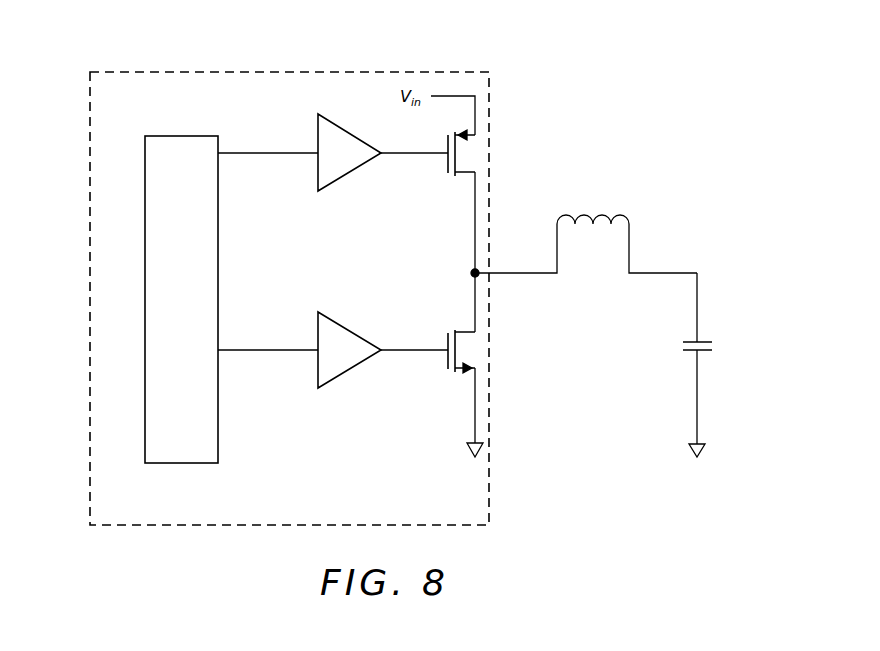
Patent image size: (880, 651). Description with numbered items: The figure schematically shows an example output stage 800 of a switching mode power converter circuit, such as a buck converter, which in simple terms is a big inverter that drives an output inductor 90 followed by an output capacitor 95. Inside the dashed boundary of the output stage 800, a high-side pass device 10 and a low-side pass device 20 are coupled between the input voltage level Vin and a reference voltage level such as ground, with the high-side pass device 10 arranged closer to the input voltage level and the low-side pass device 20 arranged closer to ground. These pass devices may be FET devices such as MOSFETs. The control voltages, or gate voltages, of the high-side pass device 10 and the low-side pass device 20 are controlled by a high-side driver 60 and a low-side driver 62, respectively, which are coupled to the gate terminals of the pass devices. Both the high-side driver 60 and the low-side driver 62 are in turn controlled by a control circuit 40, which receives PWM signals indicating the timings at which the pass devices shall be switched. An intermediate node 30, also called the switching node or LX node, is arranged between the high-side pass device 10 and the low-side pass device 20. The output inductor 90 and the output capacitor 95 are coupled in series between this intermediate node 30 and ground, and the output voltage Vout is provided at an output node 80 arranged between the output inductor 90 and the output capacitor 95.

The output stage 800 is at (178, 62).
The control circuit 40 is at (197, 136).
The high-side driver 60 is at (349, 131).
The low-side driver 62 is at (349, 328).
The high-side pass device 10 is at (468, 153).
The low-side pass device 20 is at (468, 348).
The intermediate node 30 is at (473, 268).
The output inductor 90 is at (611, 213).
The output node 80 is at (703, 266).
The output capacitor 95 is at (688, 340).